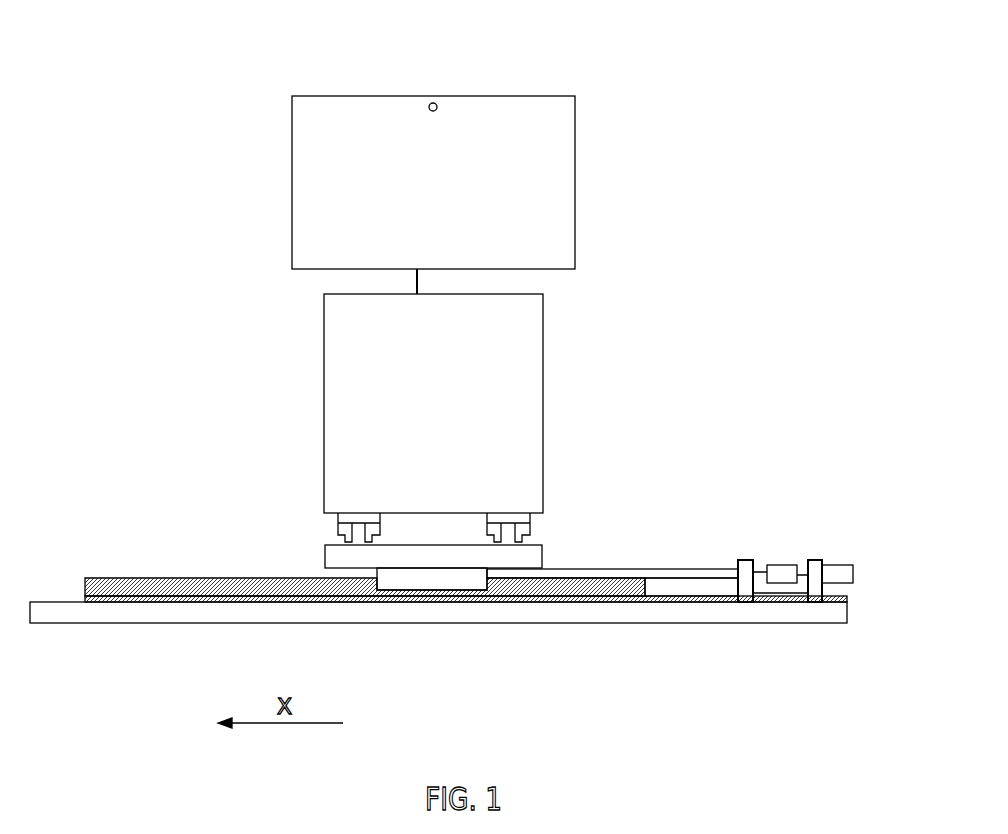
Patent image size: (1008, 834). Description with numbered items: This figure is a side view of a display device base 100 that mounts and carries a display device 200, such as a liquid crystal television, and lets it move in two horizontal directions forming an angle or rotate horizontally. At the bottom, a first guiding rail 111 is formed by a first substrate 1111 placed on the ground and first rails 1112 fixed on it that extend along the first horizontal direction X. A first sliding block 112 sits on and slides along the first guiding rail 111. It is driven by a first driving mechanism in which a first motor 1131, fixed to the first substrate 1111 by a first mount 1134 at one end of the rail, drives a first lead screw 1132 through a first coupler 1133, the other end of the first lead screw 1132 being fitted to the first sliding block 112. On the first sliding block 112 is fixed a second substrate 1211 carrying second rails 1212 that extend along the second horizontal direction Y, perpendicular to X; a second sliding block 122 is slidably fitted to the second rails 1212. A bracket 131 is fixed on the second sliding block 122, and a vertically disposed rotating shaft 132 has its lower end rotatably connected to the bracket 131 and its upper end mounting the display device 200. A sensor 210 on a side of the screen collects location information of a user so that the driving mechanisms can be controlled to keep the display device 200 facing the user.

The display device base 100 is at (467, 511).
The display device 200 is at (365, 103).
The sensor 210 is at (434, 104).
The first guiding rail 111 is at (202, 697).
The first substrate 1111 is at (172, 622).
The first rails 1112 is at (103, 622).
The first sliding block 112 is at (430, 578).
The first motor 1131 is at (835, 563).
The first lead screw 1132 is at (665, 570).
The first coupler 1133 is at (787, 568).
The first mount 1134 is at (745, 592).
The second substrate 1211 is at (525, 563).
The second rails 1212 is at (507, 533).
The second sliding block 122 is at (338, 518).
The bracket 131 is at (517, 372).
The rotating shaft 132 is at (442, 283).